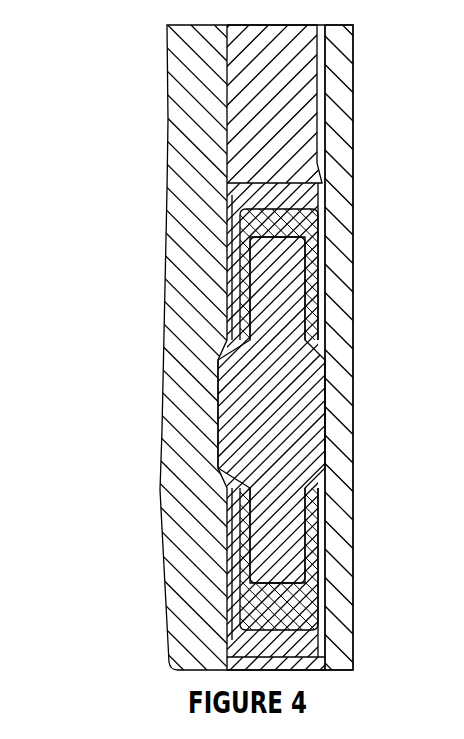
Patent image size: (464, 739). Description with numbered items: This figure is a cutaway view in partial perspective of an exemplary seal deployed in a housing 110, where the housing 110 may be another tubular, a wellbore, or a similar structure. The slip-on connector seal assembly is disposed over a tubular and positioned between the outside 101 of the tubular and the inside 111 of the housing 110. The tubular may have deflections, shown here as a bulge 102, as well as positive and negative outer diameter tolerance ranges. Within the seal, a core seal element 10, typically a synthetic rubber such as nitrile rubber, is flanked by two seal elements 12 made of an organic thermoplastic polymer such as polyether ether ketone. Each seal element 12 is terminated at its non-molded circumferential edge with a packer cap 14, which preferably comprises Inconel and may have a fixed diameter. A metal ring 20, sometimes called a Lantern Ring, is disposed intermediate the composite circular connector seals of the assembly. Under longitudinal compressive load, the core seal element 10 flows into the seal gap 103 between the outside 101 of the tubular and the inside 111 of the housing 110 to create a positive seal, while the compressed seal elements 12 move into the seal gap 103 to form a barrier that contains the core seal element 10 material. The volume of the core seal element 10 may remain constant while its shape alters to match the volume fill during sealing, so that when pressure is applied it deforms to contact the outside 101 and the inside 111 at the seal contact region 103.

The bulge 102 is at (121, 391).
The outside of tubular 101 is at (190, 112).
The metal ring 20 is at (302, 103).
The core seal element 10 is at (353, 428).
The packer cap 14 is at (232, 184).
The inside of housing 111 is at (327, 244).
The housing 110 is at (328, 568).
The seal element 12 is at (310, 206).
The seal gap 103 is at (214, 408).